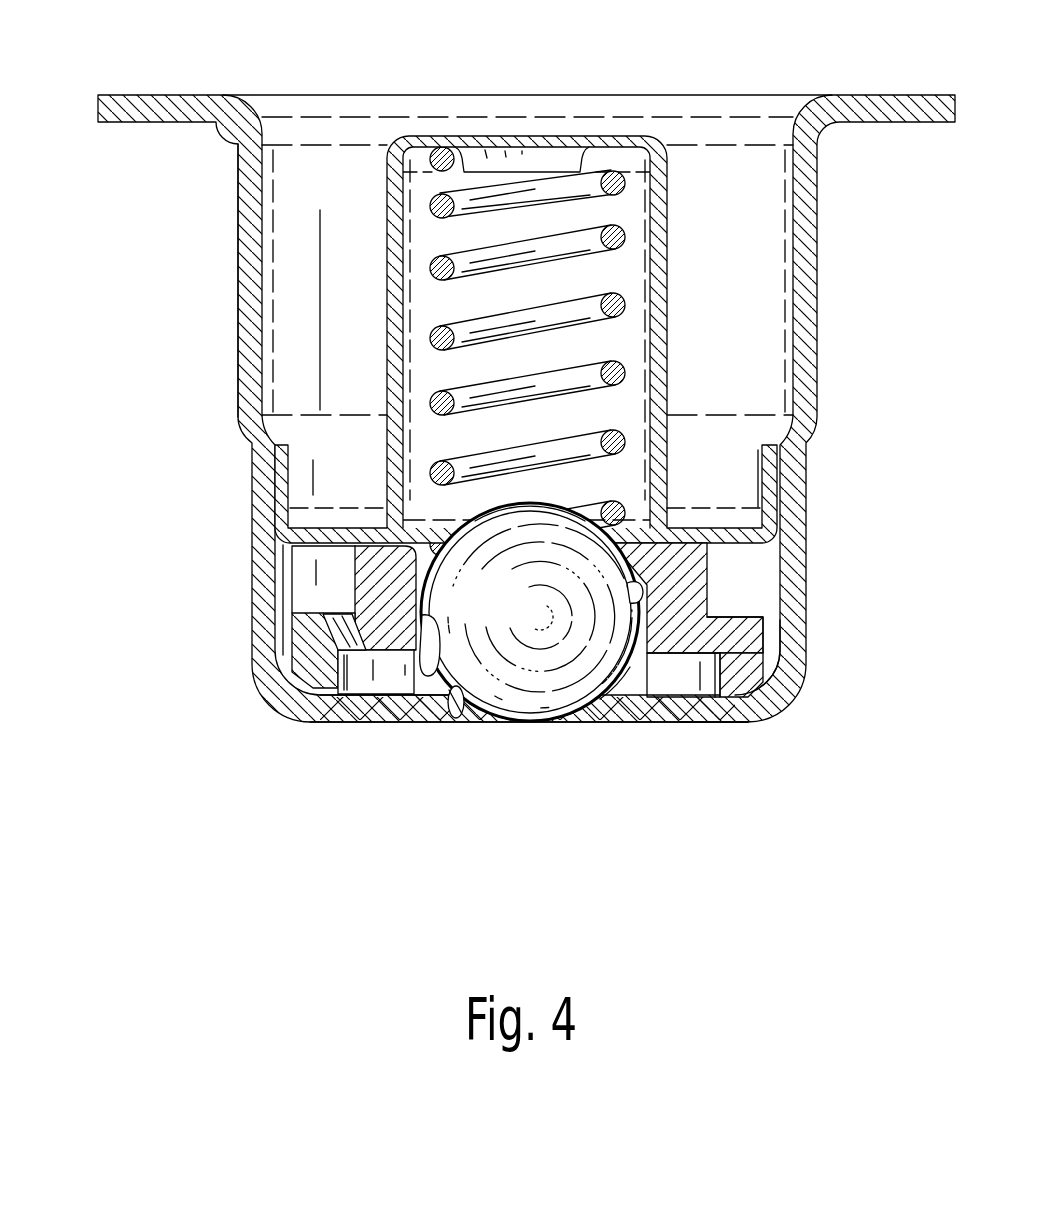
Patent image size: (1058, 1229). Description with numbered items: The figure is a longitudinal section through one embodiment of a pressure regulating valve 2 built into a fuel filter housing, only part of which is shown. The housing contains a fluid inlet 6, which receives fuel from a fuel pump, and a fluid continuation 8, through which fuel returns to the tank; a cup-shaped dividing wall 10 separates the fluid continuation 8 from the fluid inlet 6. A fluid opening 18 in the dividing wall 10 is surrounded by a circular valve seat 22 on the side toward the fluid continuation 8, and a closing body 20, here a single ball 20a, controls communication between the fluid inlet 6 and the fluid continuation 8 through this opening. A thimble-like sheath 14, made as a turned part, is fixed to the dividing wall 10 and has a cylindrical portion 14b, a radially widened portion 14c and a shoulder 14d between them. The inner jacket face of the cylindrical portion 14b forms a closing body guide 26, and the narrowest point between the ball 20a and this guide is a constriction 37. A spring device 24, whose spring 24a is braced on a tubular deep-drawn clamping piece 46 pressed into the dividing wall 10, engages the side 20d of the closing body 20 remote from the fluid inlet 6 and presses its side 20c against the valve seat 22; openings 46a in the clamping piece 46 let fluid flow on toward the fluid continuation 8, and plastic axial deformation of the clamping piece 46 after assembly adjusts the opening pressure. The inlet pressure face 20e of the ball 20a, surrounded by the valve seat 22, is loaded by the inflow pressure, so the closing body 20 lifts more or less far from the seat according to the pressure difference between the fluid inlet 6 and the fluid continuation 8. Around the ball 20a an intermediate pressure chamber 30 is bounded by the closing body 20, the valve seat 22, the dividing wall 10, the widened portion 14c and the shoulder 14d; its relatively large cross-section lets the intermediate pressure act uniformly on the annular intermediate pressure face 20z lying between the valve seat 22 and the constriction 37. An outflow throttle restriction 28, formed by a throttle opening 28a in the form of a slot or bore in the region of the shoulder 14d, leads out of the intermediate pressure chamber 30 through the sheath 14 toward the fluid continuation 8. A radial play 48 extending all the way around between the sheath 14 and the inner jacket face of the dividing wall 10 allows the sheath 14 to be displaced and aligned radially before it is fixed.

The pressure regulating valve 2 is at (230, 458).
The fluid inlet 6 is at (582, 925).
The fluid continuation 8 is at (577, 35).
The dividing wall 10 is at (805, 207).
The sheath 14 is at (713, 557).
The cylindrical portion 14b is at (680, 606).
The widened portion 14c is at (793, 703).
The shoulder 14d is at (743, 725).
The fluid opening 18 is at (453, 723).
The closing body 20 is at (488, 596).
The ball 20a is at (503, 665).
The side toward the fluid inlet 20c is at (496, 728).
The side remote from the fluid inlet 20d is at (567, 507).
The inlet pressure face 20e is at (563, 727).
The intermediate pressure face 20z is at (637, 675).
The valve seat 22 is at (457, 727).
The spring device 24 is at (585, 232).
The spring 24a is at (613, 295).
The closing body guide 26 is at (643, 586).
The outflow throttle restriction 28 is at (355, 658).
The throttle opening 28a is at (292, 655).
The intermediate pressure chamber 30 is at (690, 680).
The constriction 37 is at (380, 723).
The clamping piece 46 is at (390, 207).
The openings 46a is at (350, 530).
The play 48 is at (733, 671).